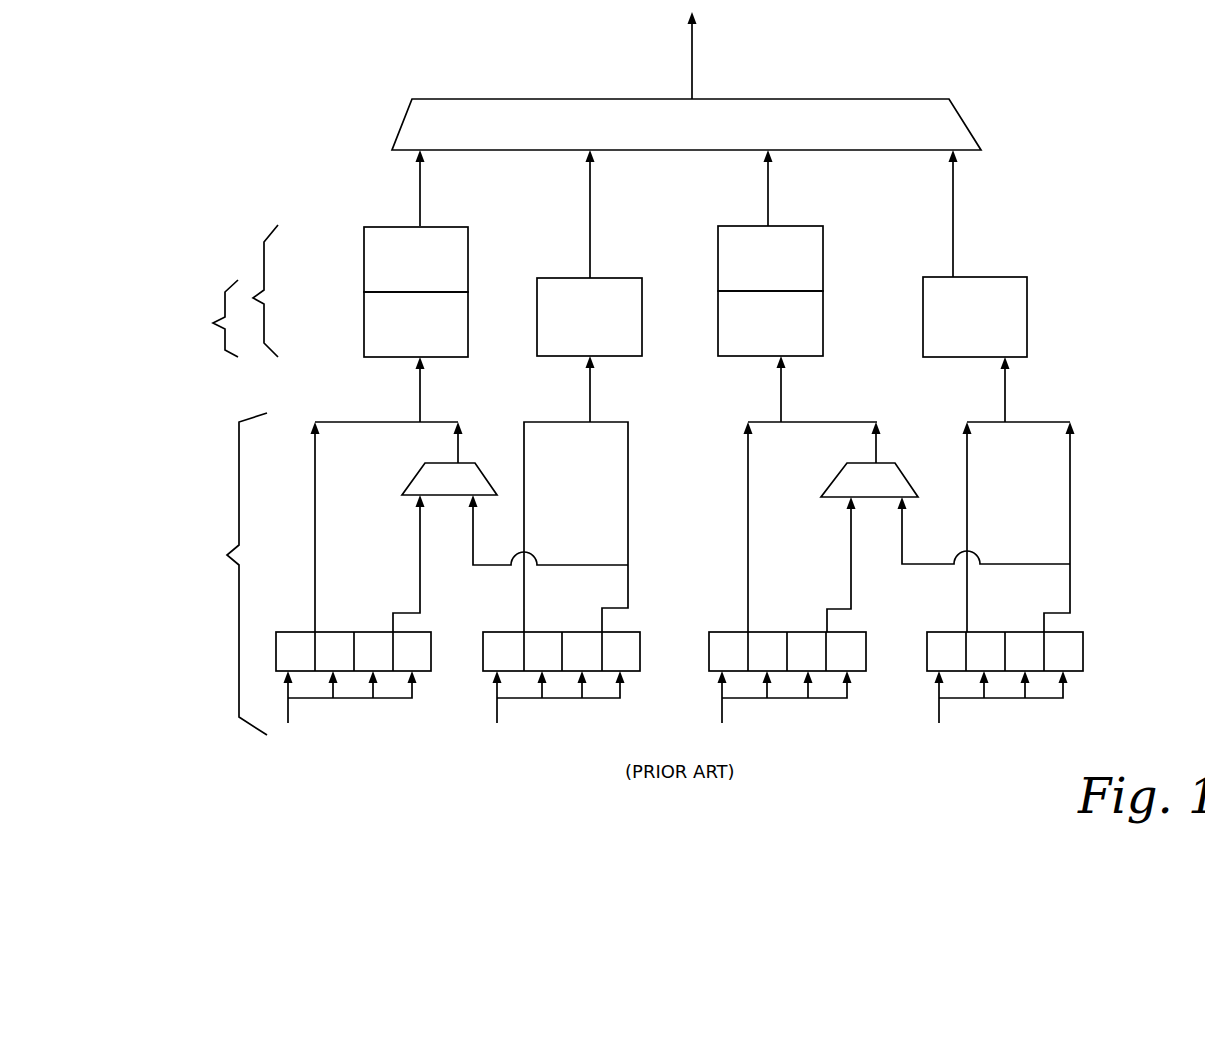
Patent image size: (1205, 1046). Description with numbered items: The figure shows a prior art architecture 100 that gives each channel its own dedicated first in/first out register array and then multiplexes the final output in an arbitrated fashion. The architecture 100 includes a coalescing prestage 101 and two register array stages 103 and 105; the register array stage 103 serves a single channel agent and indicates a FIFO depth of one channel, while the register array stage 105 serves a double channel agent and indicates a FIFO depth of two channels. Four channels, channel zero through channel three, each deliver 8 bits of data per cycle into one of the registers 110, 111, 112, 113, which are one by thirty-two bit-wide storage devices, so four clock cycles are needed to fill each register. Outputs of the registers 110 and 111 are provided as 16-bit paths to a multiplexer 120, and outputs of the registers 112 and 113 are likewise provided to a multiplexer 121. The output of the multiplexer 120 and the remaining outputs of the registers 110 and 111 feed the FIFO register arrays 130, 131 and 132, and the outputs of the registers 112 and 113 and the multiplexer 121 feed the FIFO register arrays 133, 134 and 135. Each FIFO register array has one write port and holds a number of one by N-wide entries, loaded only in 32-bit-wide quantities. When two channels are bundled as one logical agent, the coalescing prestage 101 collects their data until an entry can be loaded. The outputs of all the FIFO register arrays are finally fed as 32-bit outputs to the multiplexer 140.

The architecture 100 is at (354, 786).
The coalescing prestage 101 is at (225, 574).
The register array stage 103 is at (213, 332).
The register array stage 105 is at (275, 287).
The register 110 is at (442, 638).
The register 111 is at (642, 653).
The register 112 is at (867, 657).
The register 113 is at (1084, 653).
The multiplexer 120 is at (465, 491).
The multiplexer 121 is at (887, 492).
The FIFO register array 130 is at (439, 332).
The FIFO register array 131 is at (439, 268).
The FIFO register array 132 is at (609, 322).
The FIFO register array 133 is at (792, 331).
The FIFO register array 134 is at (790, 269).
The FIFO register array 135 is at (995, 322).
The multiplexer 140 is at (860, 129).
The 32-bit data path 32 is at (678, 82).
The 16-bit data path 16 is at (298, 552).
The 8-bit data path 8 is at (292, 707).